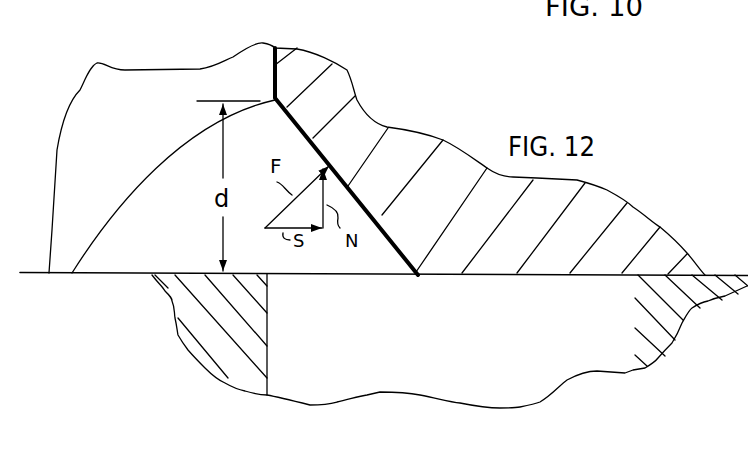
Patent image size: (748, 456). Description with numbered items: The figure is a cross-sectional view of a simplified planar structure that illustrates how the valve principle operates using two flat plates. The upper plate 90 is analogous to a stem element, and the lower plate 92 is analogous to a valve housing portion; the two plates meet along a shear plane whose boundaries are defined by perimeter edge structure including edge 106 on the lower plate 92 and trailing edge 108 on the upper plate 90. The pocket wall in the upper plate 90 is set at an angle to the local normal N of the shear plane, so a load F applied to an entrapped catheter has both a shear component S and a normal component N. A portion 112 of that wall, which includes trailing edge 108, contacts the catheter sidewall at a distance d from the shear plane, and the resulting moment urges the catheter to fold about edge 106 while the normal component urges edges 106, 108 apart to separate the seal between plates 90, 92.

The flat plate 90 is at (338, 78).
The flat plate 92 is at (178, 295).
The edge 106 is at (276, 282).
The trailing edge 108 is at (422, 284).
The portion of the wall 112 is at (284, 96).